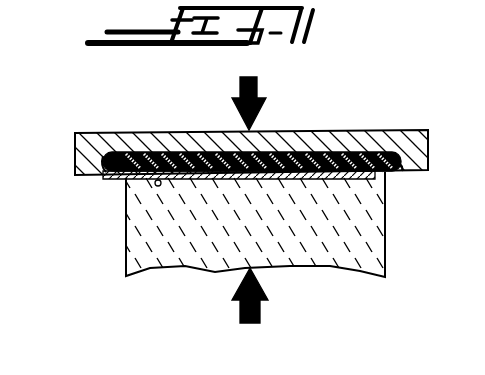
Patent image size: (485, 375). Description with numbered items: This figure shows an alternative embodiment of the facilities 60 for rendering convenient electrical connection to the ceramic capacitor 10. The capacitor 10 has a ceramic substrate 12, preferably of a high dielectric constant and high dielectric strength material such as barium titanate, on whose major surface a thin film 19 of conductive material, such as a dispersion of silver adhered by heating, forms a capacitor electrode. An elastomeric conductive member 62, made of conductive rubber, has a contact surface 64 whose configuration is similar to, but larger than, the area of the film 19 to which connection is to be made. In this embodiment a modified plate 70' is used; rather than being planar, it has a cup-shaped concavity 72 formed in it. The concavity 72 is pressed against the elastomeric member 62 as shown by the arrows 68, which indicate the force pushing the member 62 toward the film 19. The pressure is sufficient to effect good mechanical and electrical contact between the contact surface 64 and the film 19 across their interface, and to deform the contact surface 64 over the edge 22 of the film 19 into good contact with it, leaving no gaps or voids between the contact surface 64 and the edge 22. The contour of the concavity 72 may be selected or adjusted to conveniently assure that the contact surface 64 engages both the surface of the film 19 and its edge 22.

The ceramic capacitor 10 is at (166, 297).
The ceramic substrate 12 is at (372, 222).
The thin film 19 is at (388, 176).
The edge of the film 22 is at (110, 177).
The facilities 60 is at (343, 92).
The elastomeric conductive member 62 is at (403, 170).
The contact surface 64 is at (252, 132).
The arrows 68 is at (257, 81).
The modified plate 70' is at (277, 152).
The cup-shaped concavity 72 is at (342, 150).